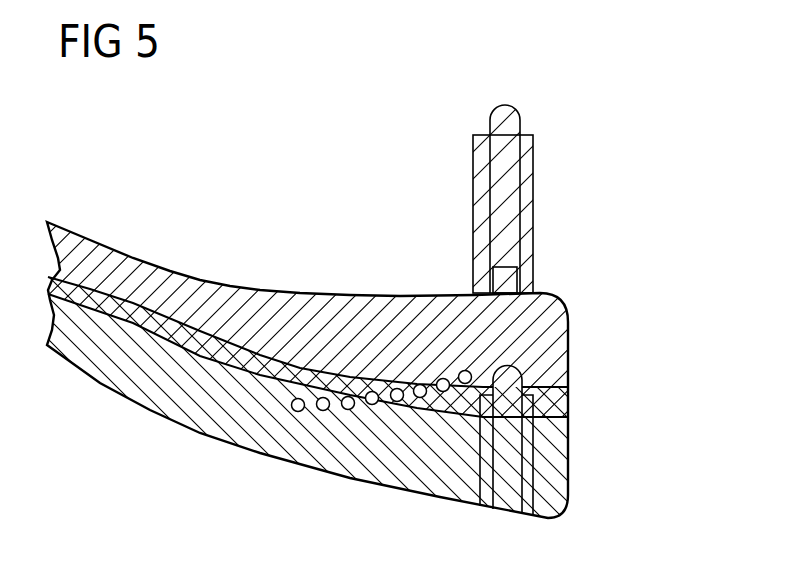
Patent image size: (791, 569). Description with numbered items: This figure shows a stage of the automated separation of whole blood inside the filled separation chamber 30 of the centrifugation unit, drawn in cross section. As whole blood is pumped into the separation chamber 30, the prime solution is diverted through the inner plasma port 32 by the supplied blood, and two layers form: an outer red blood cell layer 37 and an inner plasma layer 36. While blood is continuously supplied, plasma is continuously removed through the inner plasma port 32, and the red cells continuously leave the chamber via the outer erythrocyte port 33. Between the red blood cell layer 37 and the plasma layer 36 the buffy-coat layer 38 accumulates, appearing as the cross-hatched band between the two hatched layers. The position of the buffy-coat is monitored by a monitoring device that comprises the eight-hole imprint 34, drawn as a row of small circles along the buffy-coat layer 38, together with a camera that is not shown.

The separation chamber 30 is at (573, 327).
The inner plasma port 32 is at (521, 122).
The outer erythrocyte port 33 is at (523, 377).
The 8 hole imprint 34 is at (349, 410).
The inner plasma layer 36 is at (525, 318).
The outer red blood cell layer 37 is at (408, 467).
The buffy-coat layer 38 is at (262, 368).